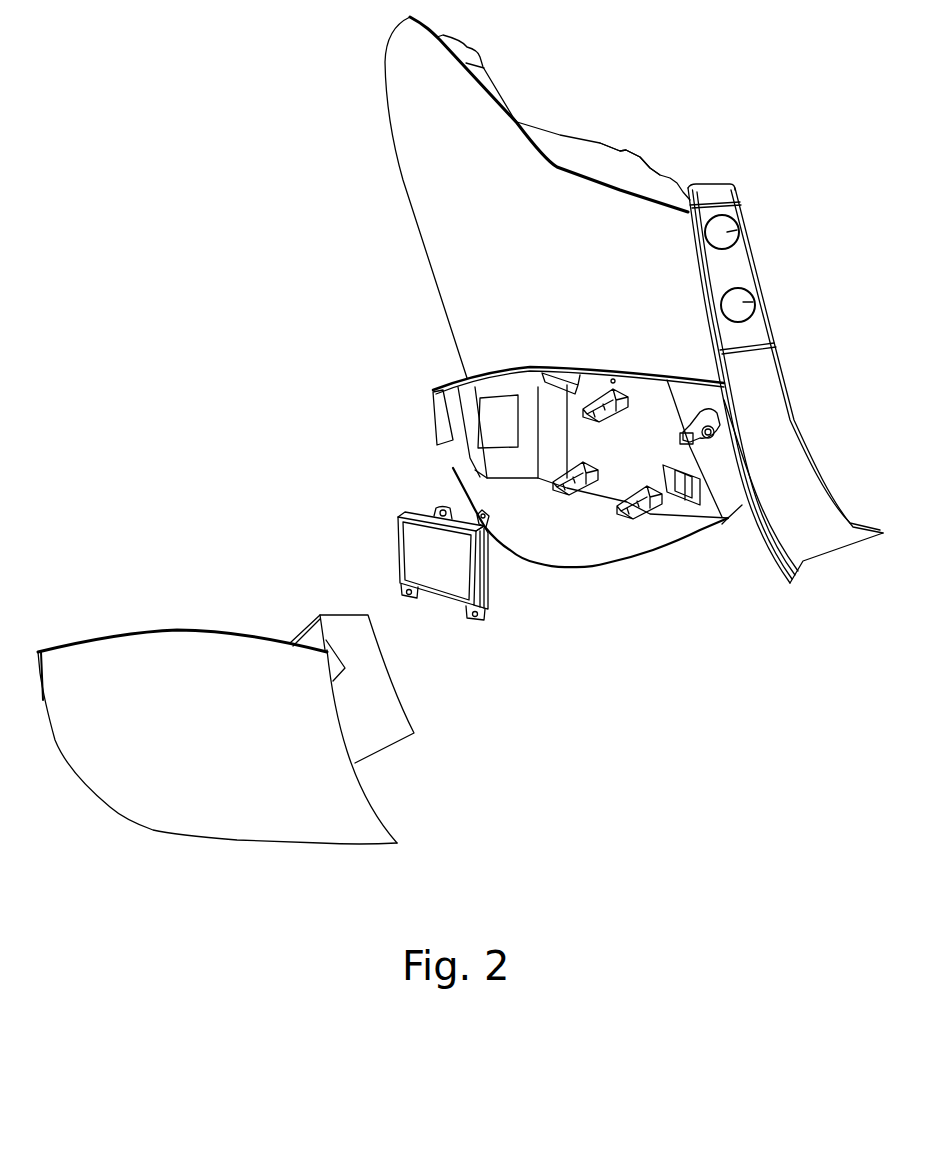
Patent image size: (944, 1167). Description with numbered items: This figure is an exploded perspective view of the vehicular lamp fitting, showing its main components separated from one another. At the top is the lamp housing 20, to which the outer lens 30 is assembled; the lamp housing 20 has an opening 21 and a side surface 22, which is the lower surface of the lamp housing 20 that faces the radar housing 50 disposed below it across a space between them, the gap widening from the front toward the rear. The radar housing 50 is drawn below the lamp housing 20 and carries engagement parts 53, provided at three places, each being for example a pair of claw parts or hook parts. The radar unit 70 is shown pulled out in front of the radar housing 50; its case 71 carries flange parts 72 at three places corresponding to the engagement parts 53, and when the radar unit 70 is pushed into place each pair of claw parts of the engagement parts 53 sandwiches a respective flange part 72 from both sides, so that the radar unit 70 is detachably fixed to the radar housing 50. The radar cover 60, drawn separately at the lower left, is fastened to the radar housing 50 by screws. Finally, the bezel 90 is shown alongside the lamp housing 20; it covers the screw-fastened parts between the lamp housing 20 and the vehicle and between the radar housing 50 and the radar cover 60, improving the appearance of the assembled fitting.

The lamp housing 20 is at (622, 162).
The opening 21 is at (740, 222).
The side surface 22 is at (762, 288).
The outer lens 30 is at (432, 265).
The radar housing 50 is at (670, 543).
The engagement parts 53 is at (613, 379).
The radar cover 60 is at (195, 655).
The radar unit 70 is at (417, 507).
The case 71 is at (488, 526).
The flange parts 72 is at (441, 510).
The bezel 90 is at (788, 433).